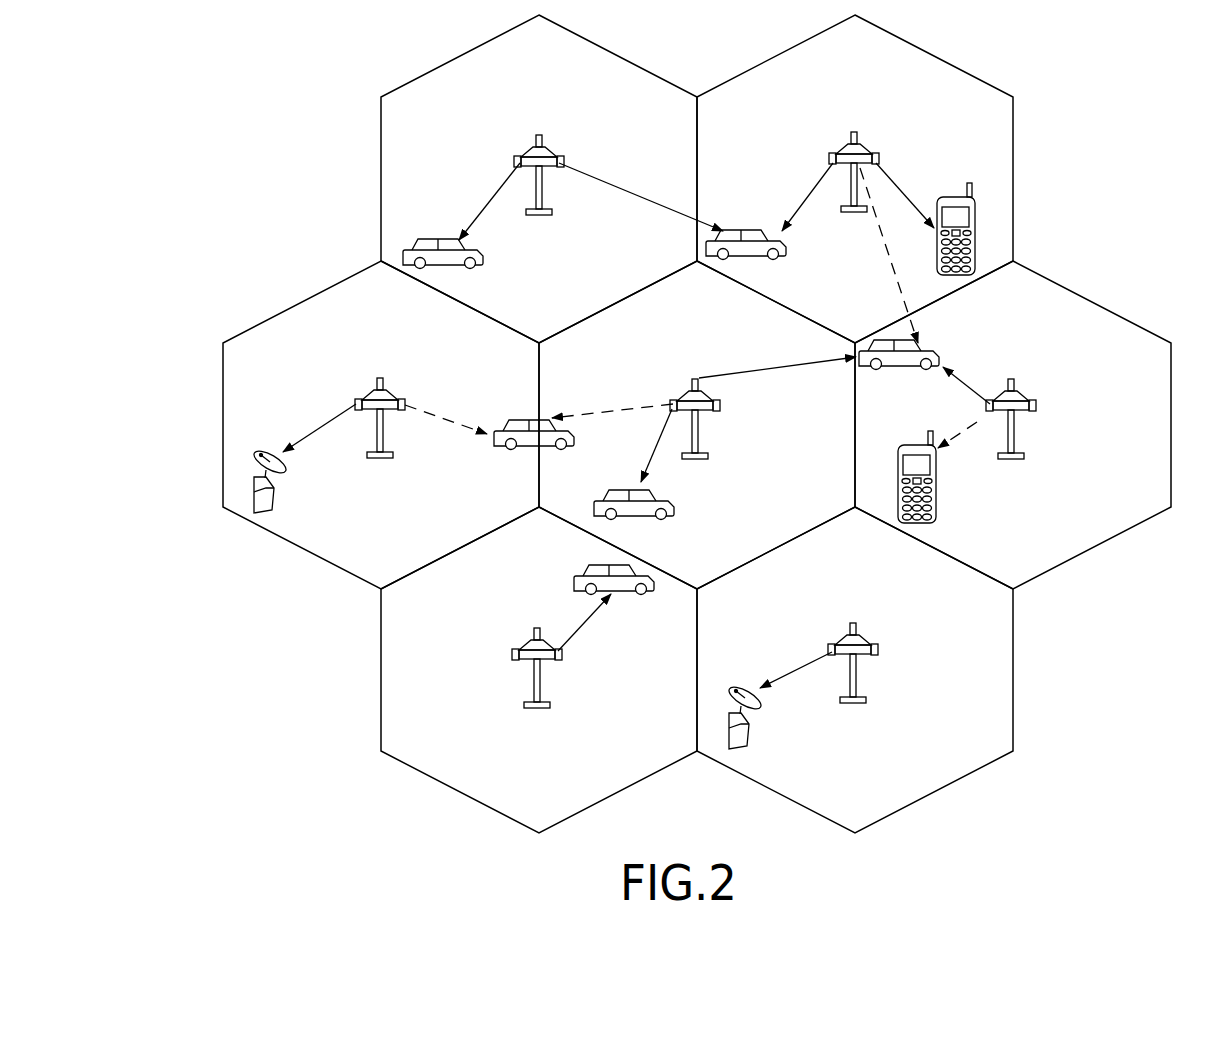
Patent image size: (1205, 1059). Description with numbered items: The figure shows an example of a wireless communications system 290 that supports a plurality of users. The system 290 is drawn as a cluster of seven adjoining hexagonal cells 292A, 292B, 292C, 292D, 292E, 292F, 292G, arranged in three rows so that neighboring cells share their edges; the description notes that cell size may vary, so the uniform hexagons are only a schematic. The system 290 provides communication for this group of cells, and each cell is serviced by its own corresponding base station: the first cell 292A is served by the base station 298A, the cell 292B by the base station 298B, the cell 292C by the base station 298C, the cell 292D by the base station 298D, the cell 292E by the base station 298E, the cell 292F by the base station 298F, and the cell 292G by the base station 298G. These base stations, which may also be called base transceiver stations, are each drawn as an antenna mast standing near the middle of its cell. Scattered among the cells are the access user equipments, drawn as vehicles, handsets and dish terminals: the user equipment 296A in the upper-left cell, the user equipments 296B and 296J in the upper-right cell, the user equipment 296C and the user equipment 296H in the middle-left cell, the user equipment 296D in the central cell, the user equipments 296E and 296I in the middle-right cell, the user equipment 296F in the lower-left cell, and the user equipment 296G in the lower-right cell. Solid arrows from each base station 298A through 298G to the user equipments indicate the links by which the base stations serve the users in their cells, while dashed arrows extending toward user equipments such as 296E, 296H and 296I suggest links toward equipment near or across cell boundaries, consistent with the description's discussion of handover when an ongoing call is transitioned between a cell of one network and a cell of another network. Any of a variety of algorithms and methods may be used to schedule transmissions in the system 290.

The wireless communications system 290 is at (146, 102).
The cell 292A is at (561, 62).
The cell 292B is at (878, 62).
The cell 292C is at (405, 317).
The cell 292D is at (717, 317).
The cell 292E is at (1038, 317).
The cell 292F is at (561, 555).
The cell 292G is at (880, 555).
The base station 298A is at (539, 134).
The base station 298B is at (854, 132).
The base station 298C is at (380, 377).
The base station 298D is at (695, 377).
The base station 298E is at (1011, 377).
The base station 298F is at (537, 625).
The base station 298G is at (853, 623).
The access user equipment 296A is at (483, 263).
The access user equipment 296B is at (953, 196).
The access user equipment 296C is at (274, 500).
The access user equipment 296D is at (674, 512).
The access user equipment 296E is at (897, 370).
The access user equipment 296F is at (650, 596).
The access user equipment 296G is at (749, 738).
The access user equipment 296H is at (498, 447).
The access user equipment 296I is at (938, 507).
The access user equipment 296J is at (746, 227).